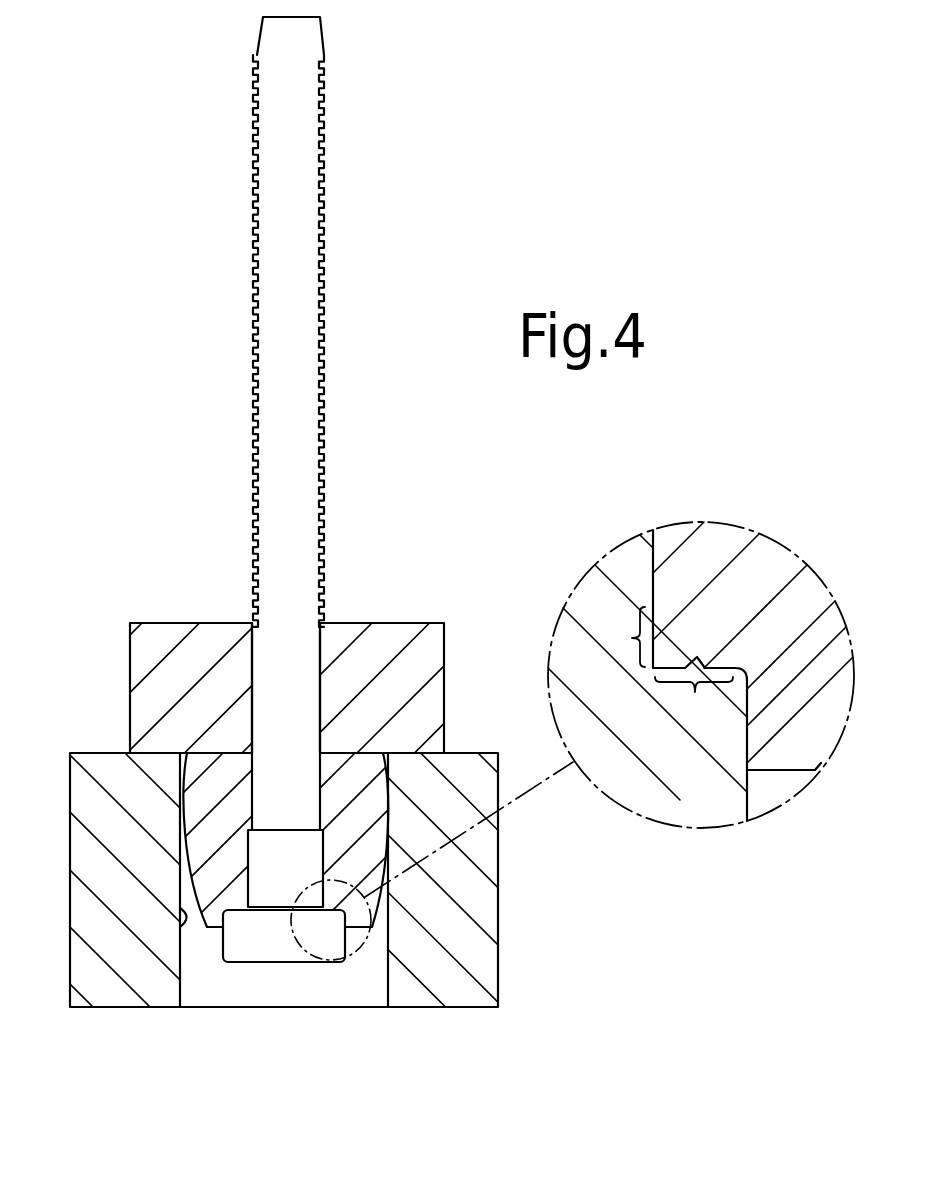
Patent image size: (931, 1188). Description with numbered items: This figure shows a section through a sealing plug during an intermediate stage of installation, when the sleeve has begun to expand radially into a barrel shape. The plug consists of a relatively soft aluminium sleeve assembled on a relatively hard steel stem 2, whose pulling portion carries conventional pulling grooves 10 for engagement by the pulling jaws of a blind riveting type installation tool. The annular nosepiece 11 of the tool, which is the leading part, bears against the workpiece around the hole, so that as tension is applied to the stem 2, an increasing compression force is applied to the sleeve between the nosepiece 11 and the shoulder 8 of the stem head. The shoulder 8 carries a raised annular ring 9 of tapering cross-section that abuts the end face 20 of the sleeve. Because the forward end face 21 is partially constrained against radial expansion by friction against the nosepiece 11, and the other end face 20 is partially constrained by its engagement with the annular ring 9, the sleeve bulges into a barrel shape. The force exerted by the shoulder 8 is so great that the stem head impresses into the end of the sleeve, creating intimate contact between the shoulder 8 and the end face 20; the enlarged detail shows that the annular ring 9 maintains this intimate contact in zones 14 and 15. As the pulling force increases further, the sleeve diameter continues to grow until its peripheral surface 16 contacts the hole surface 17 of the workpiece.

The stem 2 is at (288, 643).
The shoulder 8 is at (240, 912).
The annular ring 9 is at (700, 660).
The pulling grooves 10 is at (253, 436).
The annular nosepiece 11 is at (163, 672).
The zone 14 is at (628, 639).
The zone 15 is at (695, 692).
The peripheral surface 16 is at (188, 847).
The hole surface 17 is at (183, 913).
The end face 20 is at (673, 668).
The forward end face 21 is at (188, 780).